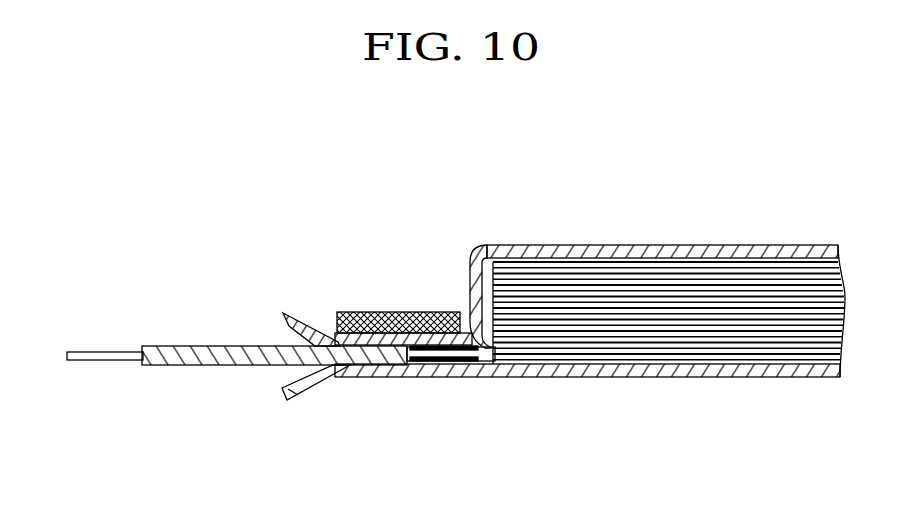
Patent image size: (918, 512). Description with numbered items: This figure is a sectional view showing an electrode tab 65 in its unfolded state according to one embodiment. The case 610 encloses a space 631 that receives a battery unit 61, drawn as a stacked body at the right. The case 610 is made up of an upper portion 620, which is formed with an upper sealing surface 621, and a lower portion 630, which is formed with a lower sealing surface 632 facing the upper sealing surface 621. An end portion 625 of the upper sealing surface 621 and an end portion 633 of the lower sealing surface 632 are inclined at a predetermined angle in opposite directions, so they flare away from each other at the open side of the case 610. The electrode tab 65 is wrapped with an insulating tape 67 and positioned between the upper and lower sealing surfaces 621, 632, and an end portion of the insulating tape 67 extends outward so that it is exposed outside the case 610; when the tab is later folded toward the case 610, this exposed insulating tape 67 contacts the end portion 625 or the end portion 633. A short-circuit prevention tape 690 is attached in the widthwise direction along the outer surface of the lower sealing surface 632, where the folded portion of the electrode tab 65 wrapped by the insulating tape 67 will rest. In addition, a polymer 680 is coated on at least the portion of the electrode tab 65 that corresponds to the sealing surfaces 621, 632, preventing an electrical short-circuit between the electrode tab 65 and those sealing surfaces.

The case 610 is at (645, 410).
The battery unit 61 is at (707, 343).
The upper portion 620 is at (552, 378).
The lower portion 630 is at (605, 245).
The space 631 is at (494, 245).
The lower sealing surface 632 is at (420, 333).
The end portion of the lower sealing surface 633 is at (288, 312).
The upper sealing surface 621 is at (357, 366).
The end portion of the upper sealing surface 625 is at (295, 390).
The electrode tab 65 is at (113, 361).
The insulating tape 67 is at (397, 378).
The polymer 680 is at (442, 378).
The short-circuit prevention tape 690 is at (358, 312).